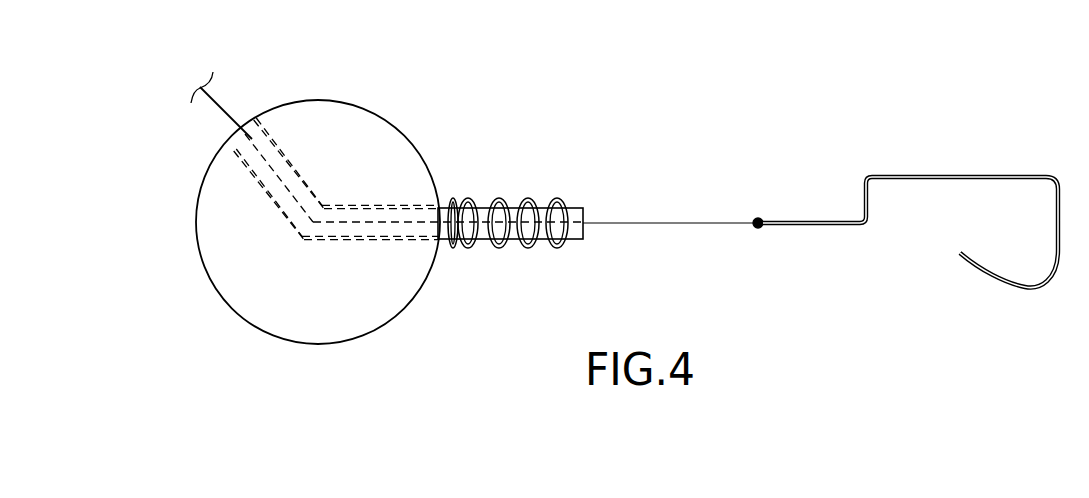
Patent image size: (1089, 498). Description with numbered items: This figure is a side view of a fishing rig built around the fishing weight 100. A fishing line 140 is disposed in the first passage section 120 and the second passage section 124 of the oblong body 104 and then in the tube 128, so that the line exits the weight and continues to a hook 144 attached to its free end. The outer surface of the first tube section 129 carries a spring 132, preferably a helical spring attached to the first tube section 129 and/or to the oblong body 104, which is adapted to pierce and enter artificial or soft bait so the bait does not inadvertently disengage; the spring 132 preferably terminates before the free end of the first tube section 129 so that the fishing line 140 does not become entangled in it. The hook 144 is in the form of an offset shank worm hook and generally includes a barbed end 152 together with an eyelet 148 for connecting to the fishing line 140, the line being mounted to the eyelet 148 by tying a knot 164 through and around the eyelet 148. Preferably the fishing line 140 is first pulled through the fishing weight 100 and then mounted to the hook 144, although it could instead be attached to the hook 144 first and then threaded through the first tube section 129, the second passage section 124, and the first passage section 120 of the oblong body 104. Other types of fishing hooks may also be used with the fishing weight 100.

The fishing weight 100 is at (391, 79).
The oblong body 104 is at (228, 307).
The first passage section 120 is at (279, 119).
The second passage section 124 is at (397, 184).
The tube 128 is at (596, 196).
The first tube section 129 is at (512, 248).
The spring 132 is at (554, 201).
The fishing line 140 is at (206, 107).
The hook 144 is at (960, 144).
The eyelet 148 is at (758, 228).
The barbed end 152 is at (973, 257).
The knot 164 is at (754, 218).